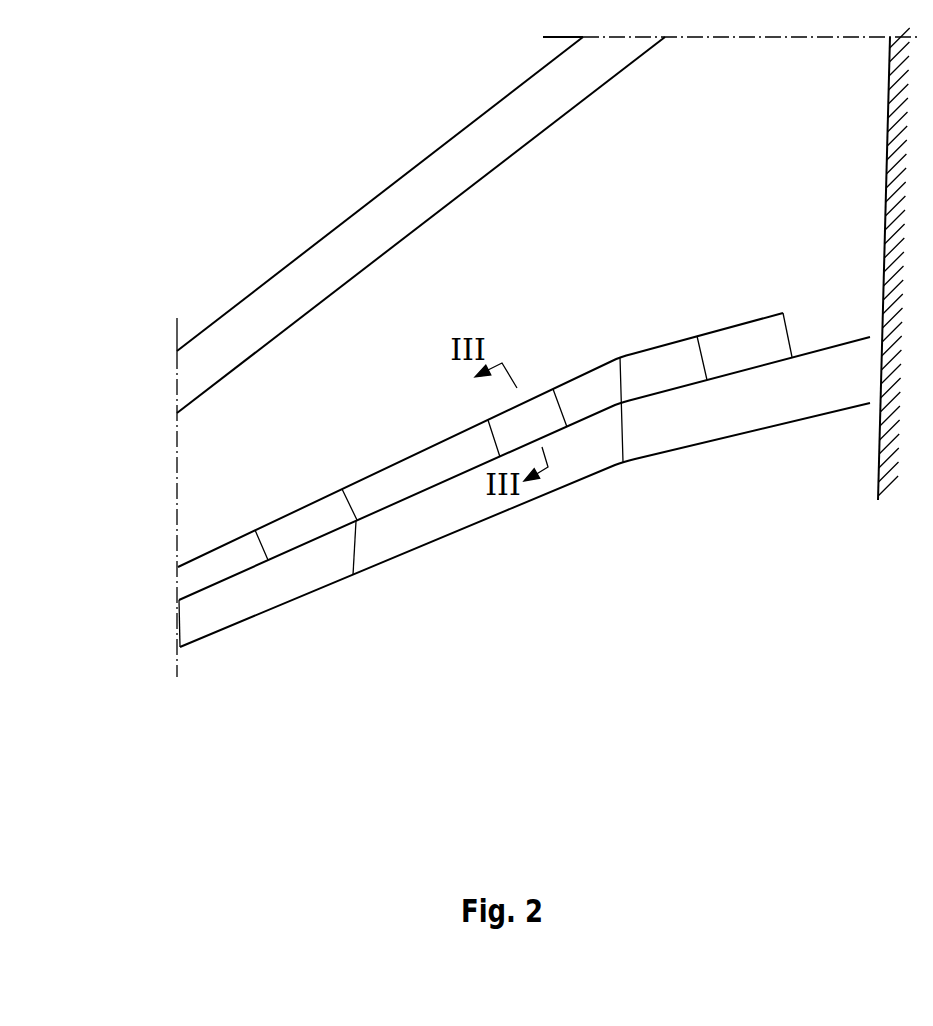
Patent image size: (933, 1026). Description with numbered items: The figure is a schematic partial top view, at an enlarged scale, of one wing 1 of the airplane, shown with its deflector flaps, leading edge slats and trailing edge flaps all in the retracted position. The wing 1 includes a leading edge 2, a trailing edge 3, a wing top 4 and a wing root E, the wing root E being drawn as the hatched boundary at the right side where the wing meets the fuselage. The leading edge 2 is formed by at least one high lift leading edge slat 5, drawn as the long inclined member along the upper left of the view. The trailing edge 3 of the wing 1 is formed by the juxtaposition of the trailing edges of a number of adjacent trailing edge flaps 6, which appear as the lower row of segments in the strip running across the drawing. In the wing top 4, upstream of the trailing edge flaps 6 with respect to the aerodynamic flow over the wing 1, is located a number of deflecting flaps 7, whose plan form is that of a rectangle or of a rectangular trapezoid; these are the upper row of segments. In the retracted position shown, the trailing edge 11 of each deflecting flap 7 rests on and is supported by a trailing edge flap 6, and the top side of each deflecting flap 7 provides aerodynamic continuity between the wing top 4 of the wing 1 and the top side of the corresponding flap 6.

The wing 1 is at (268, 192).
The leading edge 2 is at (407, 173).
The trailing edge 3 is at (520, 505).
The wing top 4 is at (307, 372).
The high lift leading edge slat 5 is at (267, 312).
The trailing edge flap 6 is at (268, 593).
The deflecting flap 7 is at (296, 500).
The trailing edge of deflecting flap 11 is at (202, 592).
The wing root E is at (885, 153).